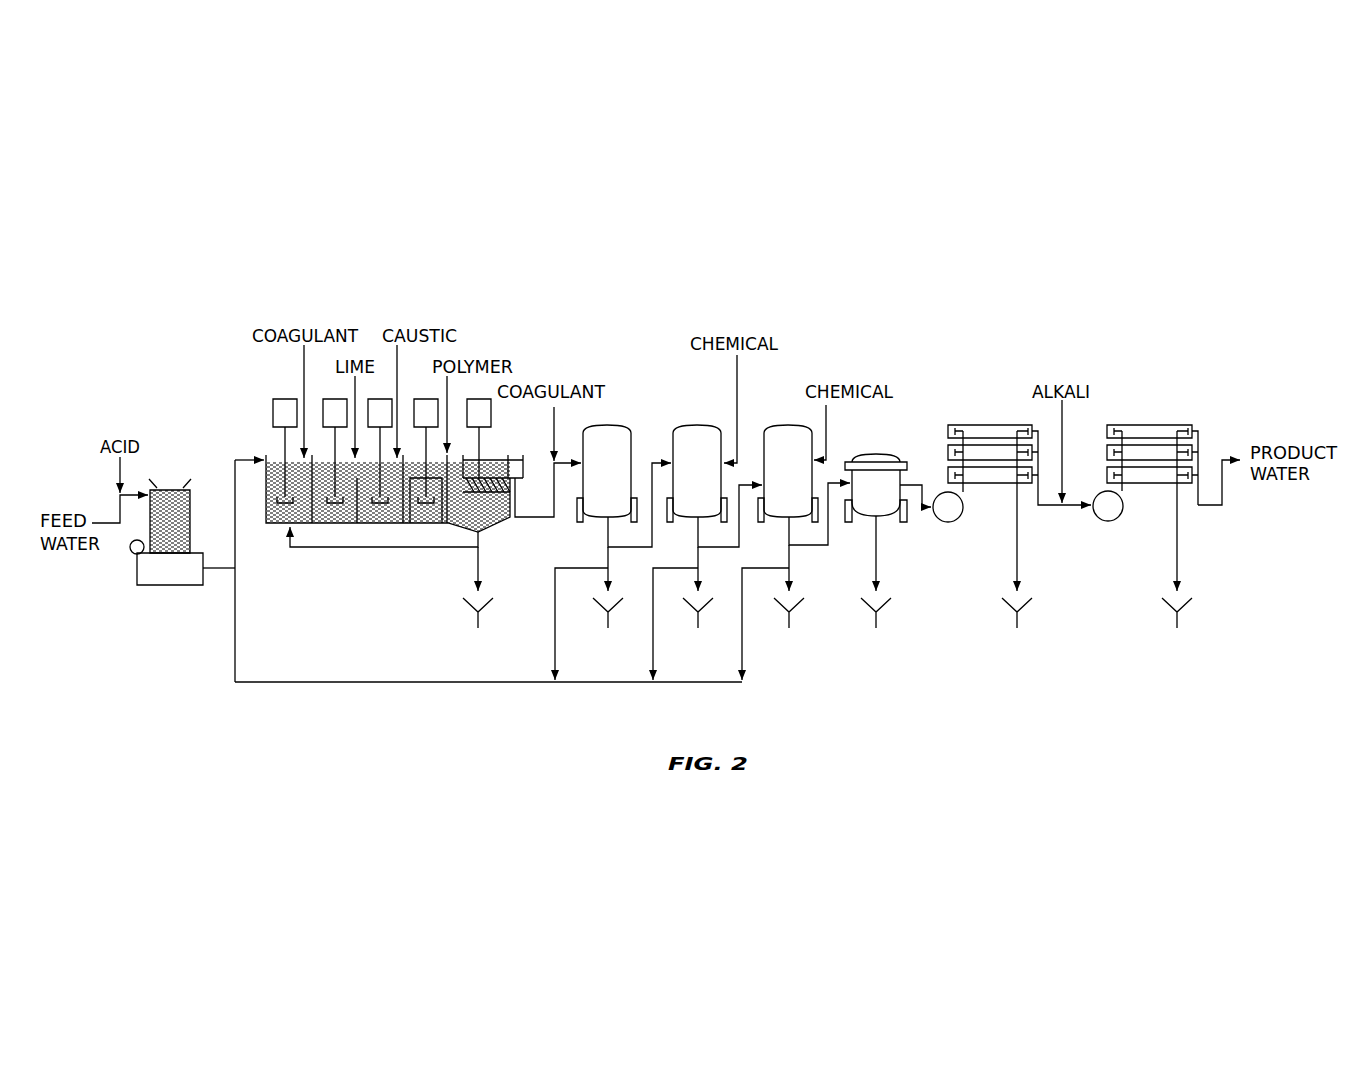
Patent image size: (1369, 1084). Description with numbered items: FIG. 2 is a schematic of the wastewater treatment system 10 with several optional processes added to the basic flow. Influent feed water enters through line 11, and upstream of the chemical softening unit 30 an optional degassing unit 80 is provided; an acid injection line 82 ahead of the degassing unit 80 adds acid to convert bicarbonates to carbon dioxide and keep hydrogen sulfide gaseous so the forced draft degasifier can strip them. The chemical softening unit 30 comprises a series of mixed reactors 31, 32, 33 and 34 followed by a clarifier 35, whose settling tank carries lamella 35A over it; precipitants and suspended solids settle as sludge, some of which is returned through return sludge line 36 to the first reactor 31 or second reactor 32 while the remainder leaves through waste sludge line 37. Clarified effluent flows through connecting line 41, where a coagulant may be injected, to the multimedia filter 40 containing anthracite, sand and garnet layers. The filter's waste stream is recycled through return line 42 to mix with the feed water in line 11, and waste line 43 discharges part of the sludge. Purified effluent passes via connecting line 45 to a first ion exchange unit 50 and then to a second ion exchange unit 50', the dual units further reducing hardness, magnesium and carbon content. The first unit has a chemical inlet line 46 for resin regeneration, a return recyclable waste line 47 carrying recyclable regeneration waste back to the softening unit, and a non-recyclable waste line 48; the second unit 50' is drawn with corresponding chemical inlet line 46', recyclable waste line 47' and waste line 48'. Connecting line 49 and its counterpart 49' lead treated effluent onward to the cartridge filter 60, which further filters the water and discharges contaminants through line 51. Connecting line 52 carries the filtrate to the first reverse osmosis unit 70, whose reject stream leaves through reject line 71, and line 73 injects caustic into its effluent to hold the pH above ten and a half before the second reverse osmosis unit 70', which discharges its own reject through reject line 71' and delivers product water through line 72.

The wastewater treatment system 10 is at (833, 269).
The line 11 is at (247, 458).
The chemical softening unit 30 is at (421, 300).
The first reactor 31 is at (280, 512).
The second reactor 32 is at (327, 515).
The reactor 33 is at (378, 515).
The reactor 34 is at (420, 515).
The clarifier 35 is at (507, 517).
The lamella 35A is at (495, 480).
The return sludge line 36 is at (470, 548).
The waste sludge line 37 is at (481, 565).
The multimedia filter 40 is at (614, 416).
The connecting line 41 is at (535, 517).
The return line 42 is at (432, 683).
The waste line 43 is at (610, 572).
The connecting line 45 is at (652, 470).
The chemical inlet line 46 is at (743, 409).
The chemical feed line 46' is at (834, 432).
The return recyclable waste line 47 is at (675, 624).
The backwash line 47' is at (765, 624).
The line 48 is at (708, 587).
The drain 48' is at (799, 586).
The connecting line 49 is at (730, 524).
The transfer line 49' is at (819, 526).
The ion exchange unit 50 is at (697, 448).
The ion exchange unit 50' is at (788, 433).
The line 51 is at (878, 557).
The connecting line 52 is at (922, 492).
The cartridge filter 60 is at (880, 441).
The reverse osmosis unit 70 is at (1019, 437).
The reverse osmosis unit 70' is at (1152, 435).
The reject line 71 is at (1033, 529).
The concentrate drain 71' is at (1194, 529).
The line 72 is at (1222, 490).
The line 73 is at (1062, 450).
The degassing unit 80 is at (170, 470).
The acid injection line 82 is at (119, 509).